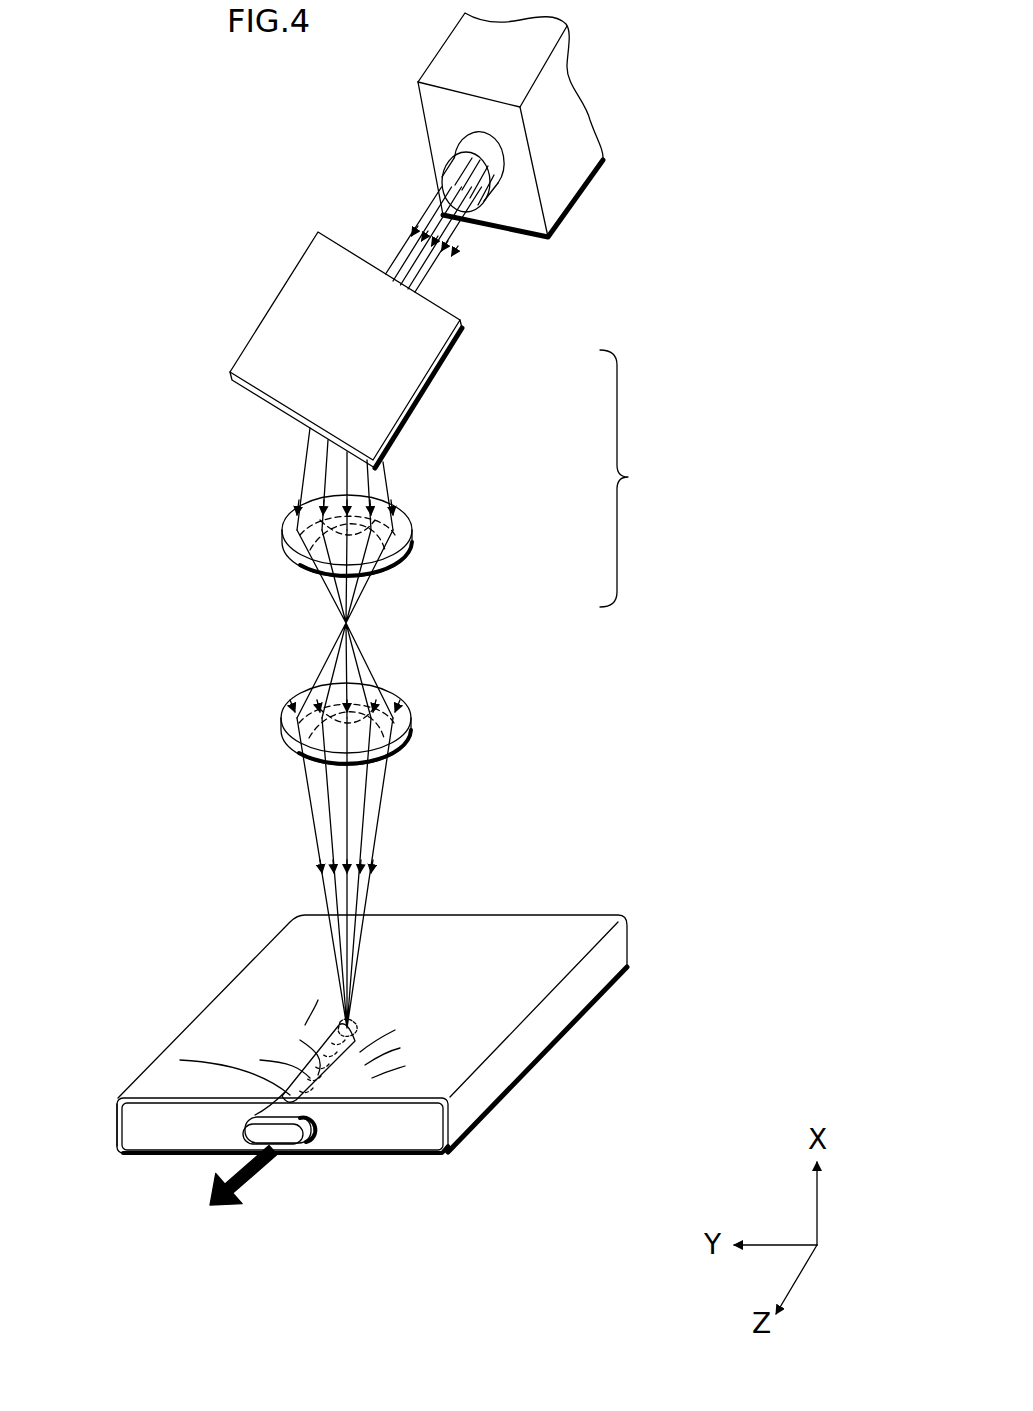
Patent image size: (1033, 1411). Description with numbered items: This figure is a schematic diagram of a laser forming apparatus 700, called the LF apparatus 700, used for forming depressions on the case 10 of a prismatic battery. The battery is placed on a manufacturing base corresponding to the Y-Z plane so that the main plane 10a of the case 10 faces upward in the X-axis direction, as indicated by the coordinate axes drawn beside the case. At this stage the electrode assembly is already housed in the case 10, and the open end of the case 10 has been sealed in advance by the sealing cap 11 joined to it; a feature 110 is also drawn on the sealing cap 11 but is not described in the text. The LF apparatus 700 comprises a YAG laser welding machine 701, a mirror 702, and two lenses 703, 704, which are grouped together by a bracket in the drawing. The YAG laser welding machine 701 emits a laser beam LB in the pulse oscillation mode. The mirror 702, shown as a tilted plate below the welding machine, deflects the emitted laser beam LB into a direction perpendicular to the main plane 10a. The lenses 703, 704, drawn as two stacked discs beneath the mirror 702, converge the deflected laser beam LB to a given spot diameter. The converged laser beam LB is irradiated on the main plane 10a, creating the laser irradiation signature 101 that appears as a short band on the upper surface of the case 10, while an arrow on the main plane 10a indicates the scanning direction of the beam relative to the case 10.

The laser forming apparatus 700 is at (645, 478).
The YAG laser welding machine 701 is at (556, 228).
The mirror 702 is at (400, 383).
The lens 703 is at (412, 555).
The lens 704 is at (412, 732).
The laser beam LB is at (422, 208).
The case 10 is at (572, 933).
The main plane 10a is at (472, 1040).
The sealing cap 11 is at (133, 1140).
The notch / projection 110 is at (310, 1150).
The laser irradiation signature 101 is at (300, 1060).